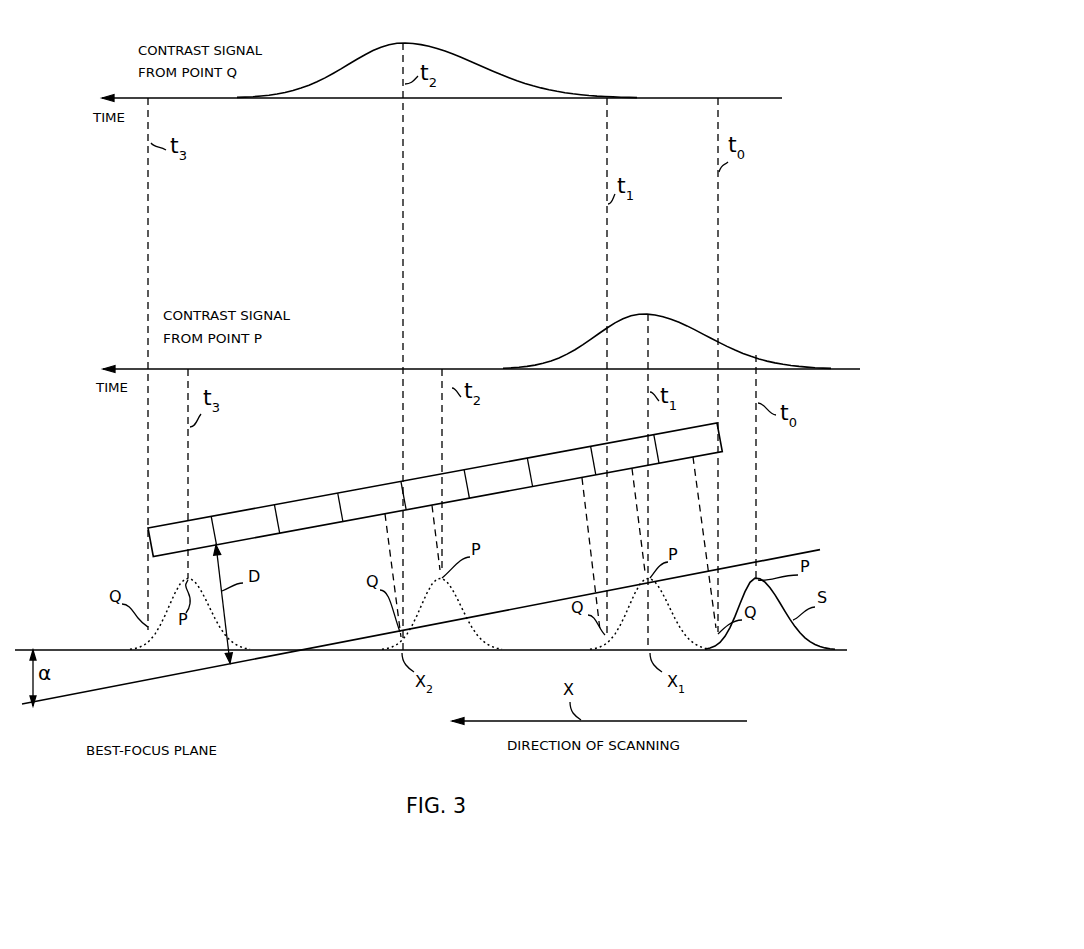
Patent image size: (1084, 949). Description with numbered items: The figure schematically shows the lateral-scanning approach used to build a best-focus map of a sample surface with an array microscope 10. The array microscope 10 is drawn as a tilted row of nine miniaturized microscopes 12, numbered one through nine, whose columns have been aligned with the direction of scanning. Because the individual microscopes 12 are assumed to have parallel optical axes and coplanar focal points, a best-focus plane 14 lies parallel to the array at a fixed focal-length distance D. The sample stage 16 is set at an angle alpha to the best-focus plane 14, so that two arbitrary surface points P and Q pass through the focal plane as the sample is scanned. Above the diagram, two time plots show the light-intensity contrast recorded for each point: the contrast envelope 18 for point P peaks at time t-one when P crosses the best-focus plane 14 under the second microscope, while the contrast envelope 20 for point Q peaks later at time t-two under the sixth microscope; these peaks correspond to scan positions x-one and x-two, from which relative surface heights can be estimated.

The array microscope 10 is at (134, 545).
The miniaturized microscopes 12 is at (217, 515).
The best-focus plane 14 is at (112, 690).
The sample stage 16 is at (76, 648).
The contrast envelope 18 is at (668, 318).
The contrast envelope 20 is at (485, 60).